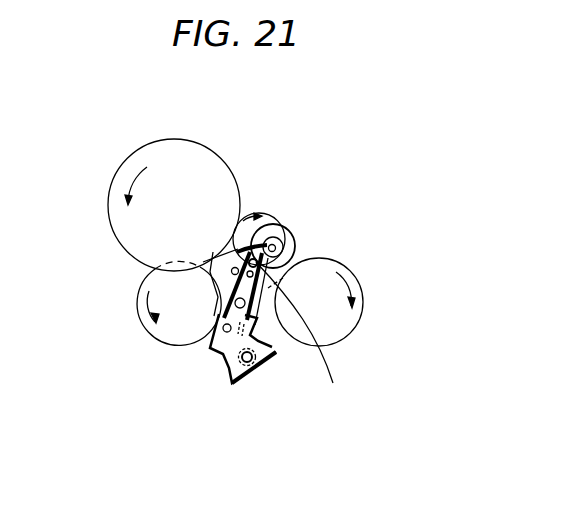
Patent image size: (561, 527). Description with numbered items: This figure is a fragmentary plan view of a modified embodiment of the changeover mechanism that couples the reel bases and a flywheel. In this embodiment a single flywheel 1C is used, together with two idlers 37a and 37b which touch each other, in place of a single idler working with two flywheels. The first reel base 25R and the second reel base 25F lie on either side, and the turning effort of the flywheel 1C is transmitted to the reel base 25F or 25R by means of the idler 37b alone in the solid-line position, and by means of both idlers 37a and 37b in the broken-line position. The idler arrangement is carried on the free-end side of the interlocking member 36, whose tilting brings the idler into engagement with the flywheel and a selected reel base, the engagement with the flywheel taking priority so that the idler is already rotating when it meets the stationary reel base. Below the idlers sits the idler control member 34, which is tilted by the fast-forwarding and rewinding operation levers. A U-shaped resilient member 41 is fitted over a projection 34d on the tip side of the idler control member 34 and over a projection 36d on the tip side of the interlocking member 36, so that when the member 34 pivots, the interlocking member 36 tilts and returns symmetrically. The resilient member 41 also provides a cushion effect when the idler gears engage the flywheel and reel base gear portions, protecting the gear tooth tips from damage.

The flywheel 1C is at (208, 151).
The second reel base 25F is at (139, 319).
The first reel base 25R is at (352, 331).
The idler 37a is at (280, 224).
The projection 36d is at (270, 262).
The interlocking member 36 is at (300, 333).
The idler 37b is at (240, 266).
The idler control member 34 is at (222, 342).
The projection 34d is at (213, 323).
The U-shaped resilient member 41 is at (262, 314).